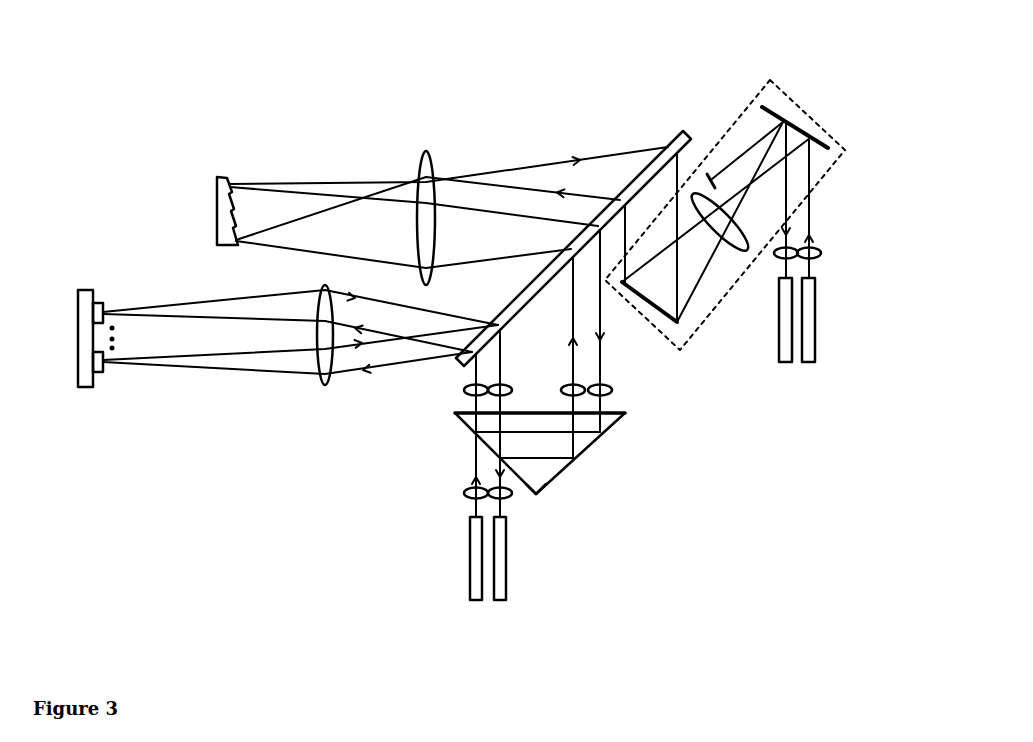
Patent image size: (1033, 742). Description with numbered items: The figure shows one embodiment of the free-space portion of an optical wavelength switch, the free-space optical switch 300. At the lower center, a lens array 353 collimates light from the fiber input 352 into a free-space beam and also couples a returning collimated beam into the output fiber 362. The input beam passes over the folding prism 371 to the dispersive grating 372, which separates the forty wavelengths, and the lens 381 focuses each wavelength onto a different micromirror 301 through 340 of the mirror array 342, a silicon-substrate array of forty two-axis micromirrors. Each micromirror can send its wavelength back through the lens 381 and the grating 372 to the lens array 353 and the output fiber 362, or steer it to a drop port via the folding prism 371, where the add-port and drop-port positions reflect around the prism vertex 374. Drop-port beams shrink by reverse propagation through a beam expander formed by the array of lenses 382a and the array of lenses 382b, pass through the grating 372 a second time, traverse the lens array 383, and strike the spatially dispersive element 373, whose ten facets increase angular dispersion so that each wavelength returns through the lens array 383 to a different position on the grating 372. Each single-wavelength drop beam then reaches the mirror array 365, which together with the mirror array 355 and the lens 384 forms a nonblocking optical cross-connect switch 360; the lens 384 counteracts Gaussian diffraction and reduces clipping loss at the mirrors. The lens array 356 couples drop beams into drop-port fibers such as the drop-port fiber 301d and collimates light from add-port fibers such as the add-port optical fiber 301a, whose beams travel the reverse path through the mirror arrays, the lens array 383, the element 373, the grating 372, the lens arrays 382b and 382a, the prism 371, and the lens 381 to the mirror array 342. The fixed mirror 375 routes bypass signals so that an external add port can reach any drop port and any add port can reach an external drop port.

The free-space optical switch 300 is at (741, 186).
The nonblocking optical cross-connect switch 360 is at (838, 157).
The mirror array 342 is at (75, 287).
The micromirror 301 is at (107, 303).
The micromirror 340 is at (105, 375).
The lens 381 is at (323, 388).
The spatially dispersive element 373 is at (222, 172).
The lens array 383 is at (423, 148).
The dispersive grating 372 is at (680, 132).
The fixed mirror 375 is at (710, 172).
The lens 384 is at (747, 253).
The mirror array 355 is at (828, 142).
The mirror array 365 is at (672, 328).
The lens array 356 is at (823, 253).
The drop-port fiber 301d is at (783, 363).
The add-port optical fiber 301a is at (808, 363).
The array of lenses 382a is at (462, 392).
The array of lenses 382b is at (613, 391).
The folding prism 371 is at (558, 477).
The prism vertex 374 is at (537, 496).
The lens array 353 is at (463, 492).
The fiber input 352 is at (473, 607).
The output fiber 362 is at (498, 607).